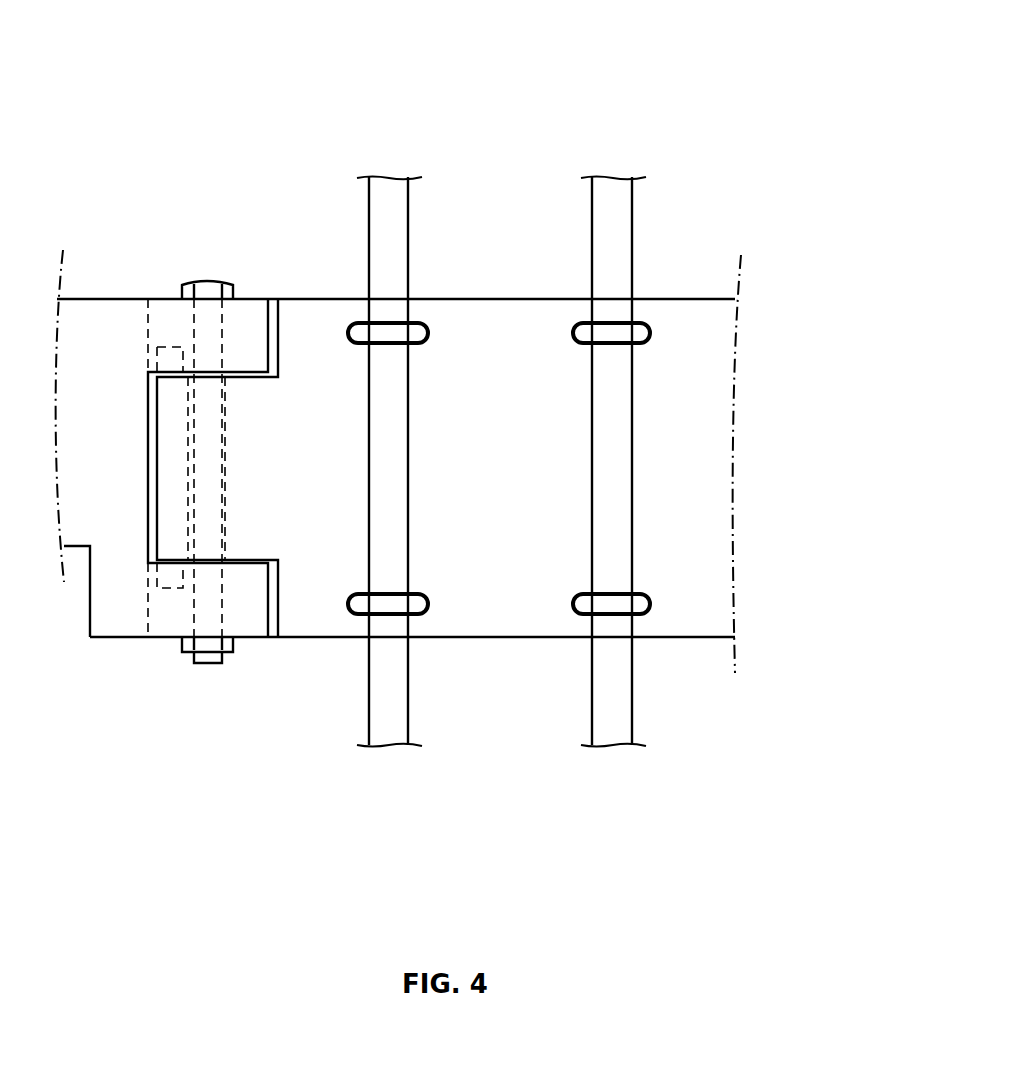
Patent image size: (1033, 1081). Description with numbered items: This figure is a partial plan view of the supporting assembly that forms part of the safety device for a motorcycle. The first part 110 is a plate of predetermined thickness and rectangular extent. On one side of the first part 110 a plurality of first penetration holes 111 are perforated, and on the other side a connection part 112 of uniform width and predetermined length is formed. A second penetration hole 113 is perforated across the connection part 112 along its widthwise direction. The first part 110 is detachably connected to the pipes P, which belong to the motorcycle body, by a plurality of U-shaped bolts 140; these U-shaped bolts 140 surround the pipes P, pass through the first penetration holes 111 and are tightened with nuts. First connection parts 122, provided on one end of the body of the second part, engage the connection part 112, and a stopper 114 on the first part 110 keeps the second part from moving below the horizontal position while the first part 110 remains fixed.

The first part 110 is at (675, 286).
The first penetration holes 111 is at (647, 338).
The connection part 112 is at (168, 488).
The second penetration hole 113 is at (220, 535).
The stopper 114 is at (170, 592).
The first connection parts 122 is at (257, 593).
The U-shaped bolts 140 is at (395, 333).
The pipes P is at (408, 250).